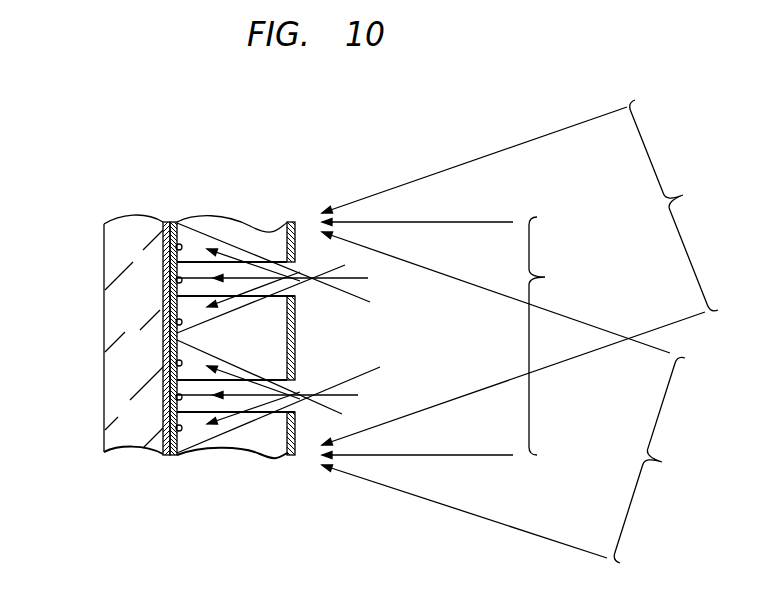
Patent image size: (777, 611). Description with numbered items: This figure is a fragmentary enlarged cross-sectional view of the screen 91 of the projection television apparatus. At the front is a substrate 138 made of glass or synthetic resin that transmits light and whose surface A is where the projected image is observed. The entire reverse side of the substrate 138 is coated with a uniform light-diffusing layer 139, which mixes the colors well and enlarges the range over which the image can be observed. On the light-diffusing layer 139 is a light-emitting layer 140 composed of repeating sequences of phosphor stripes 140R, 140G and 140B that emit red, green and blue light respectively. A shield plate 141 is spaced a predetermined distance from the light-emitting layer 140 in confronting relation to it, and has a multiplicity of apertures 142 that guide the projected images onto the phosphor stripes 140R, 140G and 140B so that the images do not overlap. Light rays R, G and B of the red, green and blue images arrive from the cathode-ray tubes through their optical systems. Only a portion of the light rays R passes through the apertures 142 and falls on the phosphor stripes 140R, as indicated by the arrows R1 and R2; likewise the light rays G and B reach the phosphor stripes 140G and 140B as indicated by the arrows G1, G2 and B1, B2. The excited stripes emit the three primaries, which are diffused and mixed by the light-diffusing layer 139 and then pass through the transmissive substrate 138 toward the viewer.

The screen 91 is at (177, 148).
The surface A is at (102, 236).
The substrate 138 is at (133, 224).
The light-diffusing layer 139 is at (163, 222).
The light-emitting layer 140 is at (177, 221).
The phosphor stripe 140R is at (163, 256).
The phosphor stripe 140G is at (163, 293).
The phosphor stripe 140B is at (163, 332).
The shield plate 141 is at (291, 221).
The aperture 142 is at (296, 288).
The arrow R1 is at (273, 262).
The arrow G1 is at (272, 282).
The arrow B1 is at (261, 299).
The arrow R2 is at (259, 377).
The arrow G2 is at (267, 401).
The arrow B2 is at (278, 410).
The light rays B is at (520, 272).
The light rays G is at (443, 338).
The light rays R is at (503, 397).